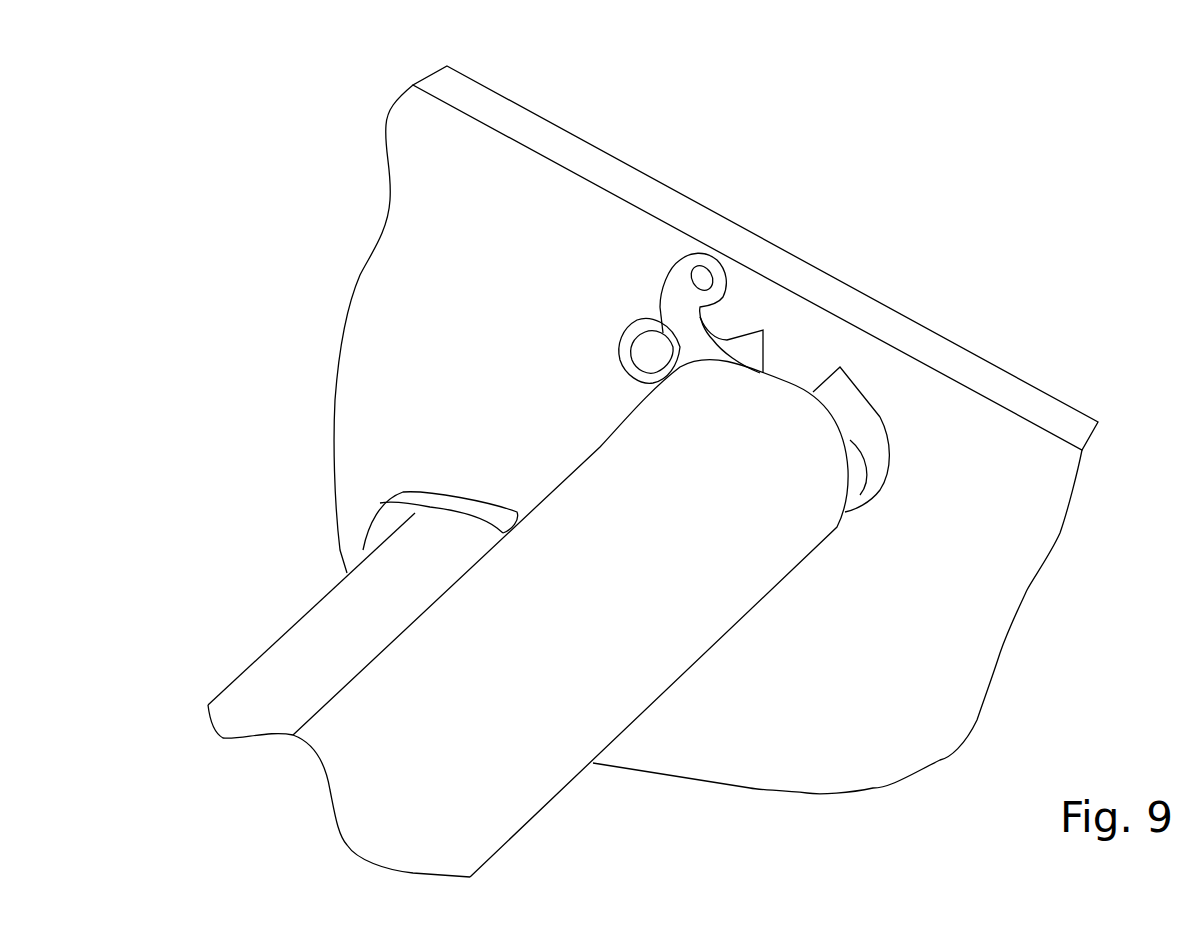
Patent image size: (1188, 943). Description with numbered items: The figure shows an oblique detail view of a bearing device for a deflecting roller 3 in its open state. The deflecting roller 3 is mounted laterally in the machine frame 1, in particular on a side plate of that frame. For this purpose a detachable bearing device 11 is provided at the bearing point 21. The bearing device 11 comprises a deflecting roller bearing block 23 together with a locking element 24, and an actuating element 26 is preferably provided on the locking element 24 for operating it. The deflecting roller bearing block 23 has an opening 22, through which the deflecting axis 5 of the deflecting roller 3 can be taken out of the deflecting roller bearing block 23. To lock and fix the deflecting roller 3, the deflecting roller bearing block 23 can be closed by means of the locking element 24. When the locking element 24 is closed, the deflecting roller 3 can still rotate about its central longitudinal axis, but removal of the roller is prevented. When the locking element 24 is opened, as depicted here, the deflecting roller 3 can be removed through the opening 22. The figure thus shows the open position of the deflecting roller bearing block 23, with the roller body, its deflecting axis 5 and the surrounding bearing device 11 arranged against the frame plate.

The machine frame 1 is at (1000, 390).
The deflecting roller 3 is at (482, 747).
The deflecting axis 5 is at (797, 387).
The bearing device 11 is at (661, 320).
The bearing point 21 is at (800, 357).
The opening 22 is at (760, 323).
The deflecting roller bearing block 23 is at (850, 407).
The locking element 24 is at (685, 300).
The actuating element 26 is at (640, 318).